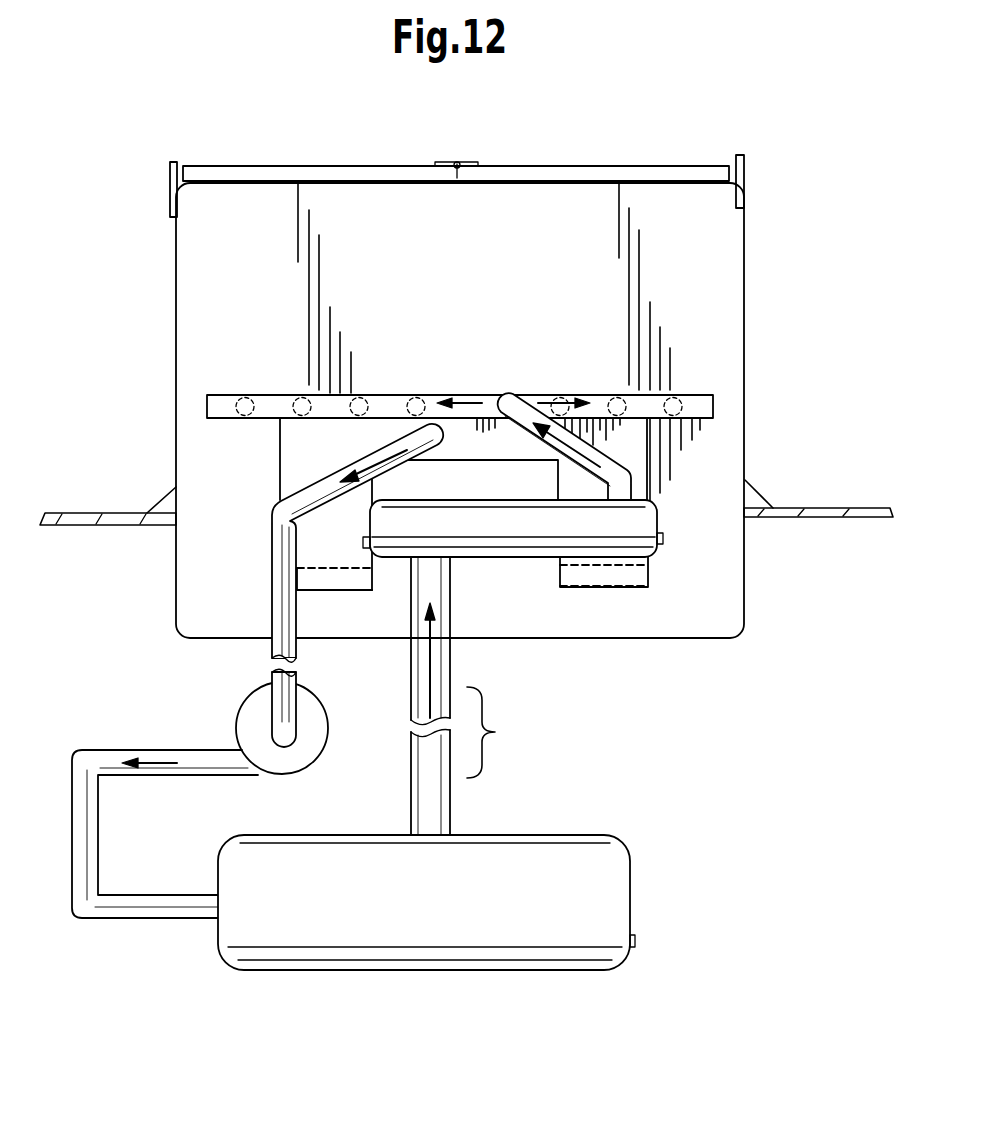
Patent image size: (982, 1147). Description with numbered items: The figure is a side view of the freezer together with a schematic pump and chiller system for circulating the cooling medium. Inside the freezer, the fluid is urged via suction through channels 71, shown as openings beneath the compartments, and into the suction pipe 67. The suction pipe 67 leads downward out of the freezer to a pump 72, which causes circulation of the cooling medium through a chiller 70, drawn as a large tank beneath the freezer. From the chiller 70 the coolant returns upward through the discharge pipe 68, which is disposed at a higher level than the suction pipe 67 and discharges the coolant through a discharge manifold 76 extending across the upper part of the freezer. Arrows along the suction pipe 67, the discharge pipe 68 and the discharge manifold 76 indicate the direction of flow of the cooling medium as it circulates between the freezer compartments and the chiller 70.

The suction pipe 67 is at (278, 613).
The discharge pipe 68 is at (614, 473).
The chiller 70 is at (585, 860).
The channels 71 is at (343, 572).
The pump 72 is at (250, 714).
The discharge manifold 76 is at (703, 395).